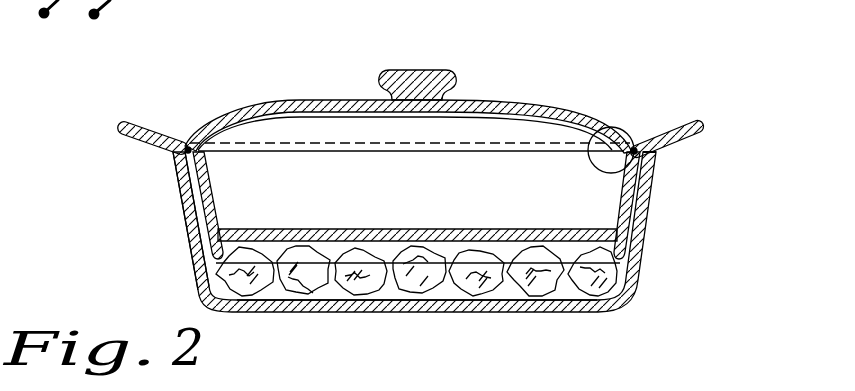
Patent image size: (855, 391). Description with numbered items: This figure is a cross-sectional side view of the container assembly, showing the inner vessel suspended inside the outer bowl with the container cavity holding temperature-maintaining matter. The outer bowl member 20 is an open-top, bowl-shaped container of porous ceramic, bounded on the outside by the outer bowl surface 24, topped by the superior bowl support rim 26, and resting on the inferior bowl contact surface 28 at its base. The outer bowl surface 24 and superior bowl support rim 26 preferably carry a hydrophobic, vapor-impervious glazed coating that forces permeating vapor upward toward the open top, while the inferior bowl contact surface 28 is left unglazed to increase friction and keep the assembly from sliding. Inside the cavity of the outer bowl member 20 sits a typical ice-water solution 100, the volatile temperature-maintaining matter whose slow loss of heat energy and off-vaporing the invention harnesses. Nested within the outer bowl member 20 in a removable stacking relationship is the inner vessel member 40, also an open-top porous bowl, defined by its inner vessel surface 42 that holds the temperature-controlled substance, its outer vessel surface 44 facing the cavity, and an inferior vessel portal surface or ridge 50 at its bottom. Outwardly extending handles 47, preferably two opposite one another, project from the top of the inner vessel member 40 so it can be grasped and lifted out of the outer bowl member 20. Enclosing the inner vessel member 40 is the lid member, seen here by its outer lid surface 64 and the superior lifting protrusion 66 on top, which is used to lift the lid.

The outer bowl member 20 is at (630, 255).
The outer bowl surface 24 is at (185, 214).
The superior bowl support rim 26 is at (652, 155).
The inferior bowl contact surface 28 is at (408, 310).
The inner vessel member 40 is at (200, 182).
The inner vessel surface 42 is at (622, 152).
The outer vessel surface 44 is at (634, 207).
The outwardly extending handle 47 is at (125, 127).
The inferior vessel portal surface or ridge 50 is at (215, 256).
The outer lid surface 64 is at (277, 100).
The superior lifting protrusion 66 is at (402, 68).
The ice-water solution 100 is at (557, 303).